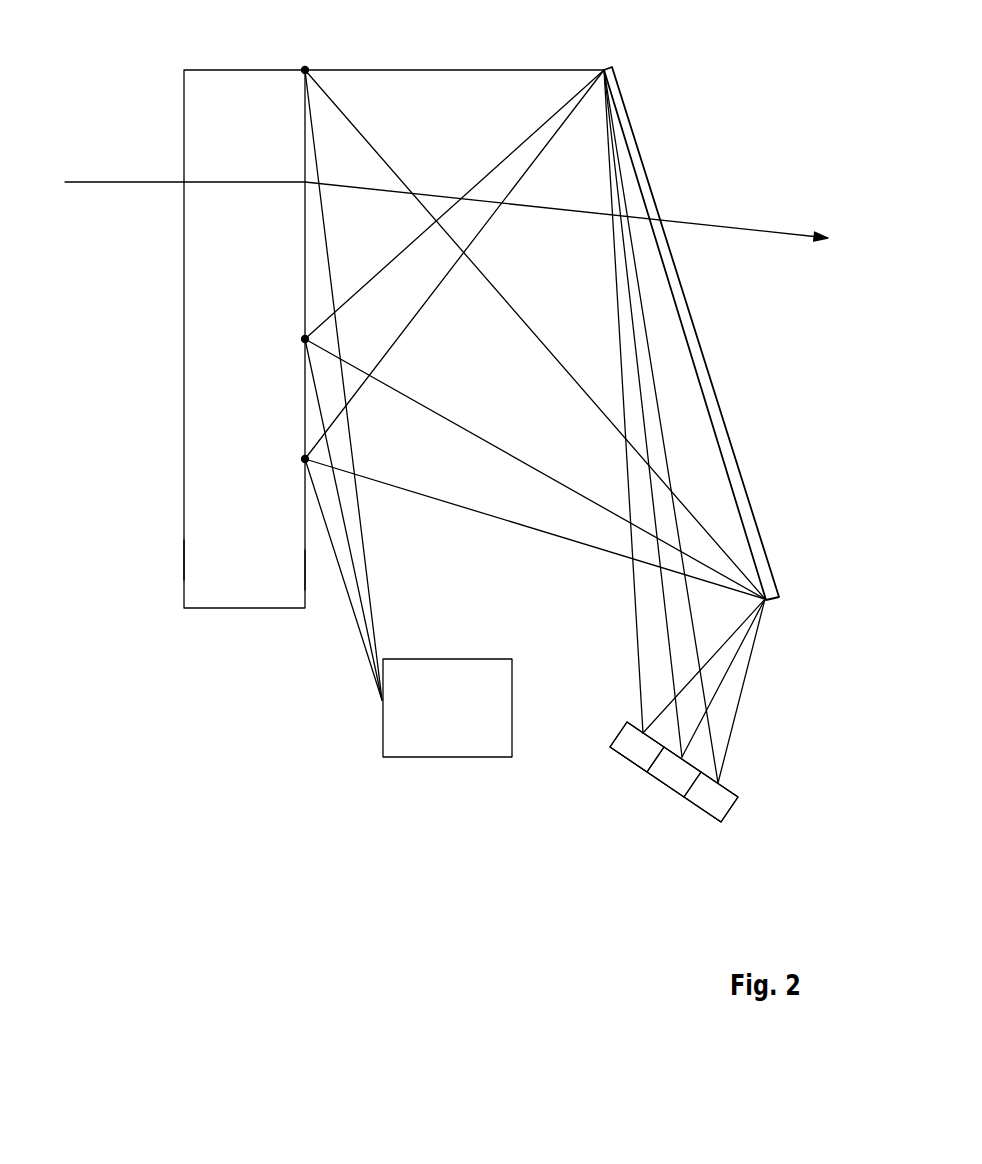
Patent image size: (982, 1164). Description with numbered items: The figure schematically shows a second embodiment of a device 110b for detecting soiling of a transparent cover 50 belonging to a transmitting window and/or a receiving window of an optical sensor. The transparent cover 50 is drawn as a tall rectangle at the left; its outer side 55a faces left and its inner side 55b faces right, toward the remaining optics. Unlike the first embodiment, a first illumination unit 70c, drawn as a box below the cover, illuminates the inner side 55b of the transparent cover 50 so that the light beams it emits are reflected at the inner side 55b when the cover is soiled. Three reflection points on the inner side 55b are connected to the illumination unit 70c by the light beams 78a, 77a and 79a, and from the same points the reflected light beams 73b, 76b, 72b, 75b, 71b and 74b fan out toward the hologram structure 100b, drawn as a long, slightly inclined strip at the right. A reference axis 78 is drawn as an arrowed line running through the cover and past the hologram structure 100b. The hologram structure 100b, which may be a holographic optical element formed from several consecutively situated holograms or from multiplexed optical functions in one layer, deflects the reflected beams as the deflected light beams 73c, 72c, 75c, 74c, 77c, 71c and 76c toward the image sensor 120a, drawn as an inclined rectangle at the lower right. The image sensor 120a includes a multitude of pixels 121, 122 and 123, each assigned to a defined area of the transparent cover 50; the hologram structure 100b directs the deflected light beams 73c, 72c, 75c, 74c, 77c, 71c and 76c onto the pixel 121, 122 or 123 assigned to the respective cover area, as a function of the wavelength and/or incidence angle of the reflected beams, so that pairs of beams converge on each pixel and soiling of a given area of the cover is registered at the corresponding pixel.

The transparent cover 50 is at (184, 532).
The first side of light source unit 55a is at (170, 561).
The inner side of transparent cover 55b is at (320, 569).
The first illumination unit 70c is at (445, 757).
The reflected light beam 73b is at (487, 68).
The light beam 76b is at (375, 148).
The reflected light beam 72b is at (362, 288).
The light beam 75b is at (440, 413).
The reflected light beam 71b is at (422, 312).
The light beam 74b is at (405, 490).
The light beam 78a is at (352, 422).
The light beam 77a is at (330, 452).
The light beam 79a is at (358, 632).
The optical axis 78 is at (95, 180).
The mirror 100b is at (678, 280).
The device 110b is at (742, 103).
The deflected light beam 73c is at (638, 594).
The deflected light beam 72c is at (668, 625).
The deflected light beam 75c is at (697, 648).
The reflected light beam 74c is at (655, 395).
The deflected light beam 77c is at (713, 657).
The deflected light beam 71c is at (746, 635).
The deflected light beam 76c is at (743, 687).
The image sensor 120a is at (746, 817).
The pixel 121 is at (630, 750).
The pixel 122 is at (675, 778).
The pixel 123 is at (712, 800).